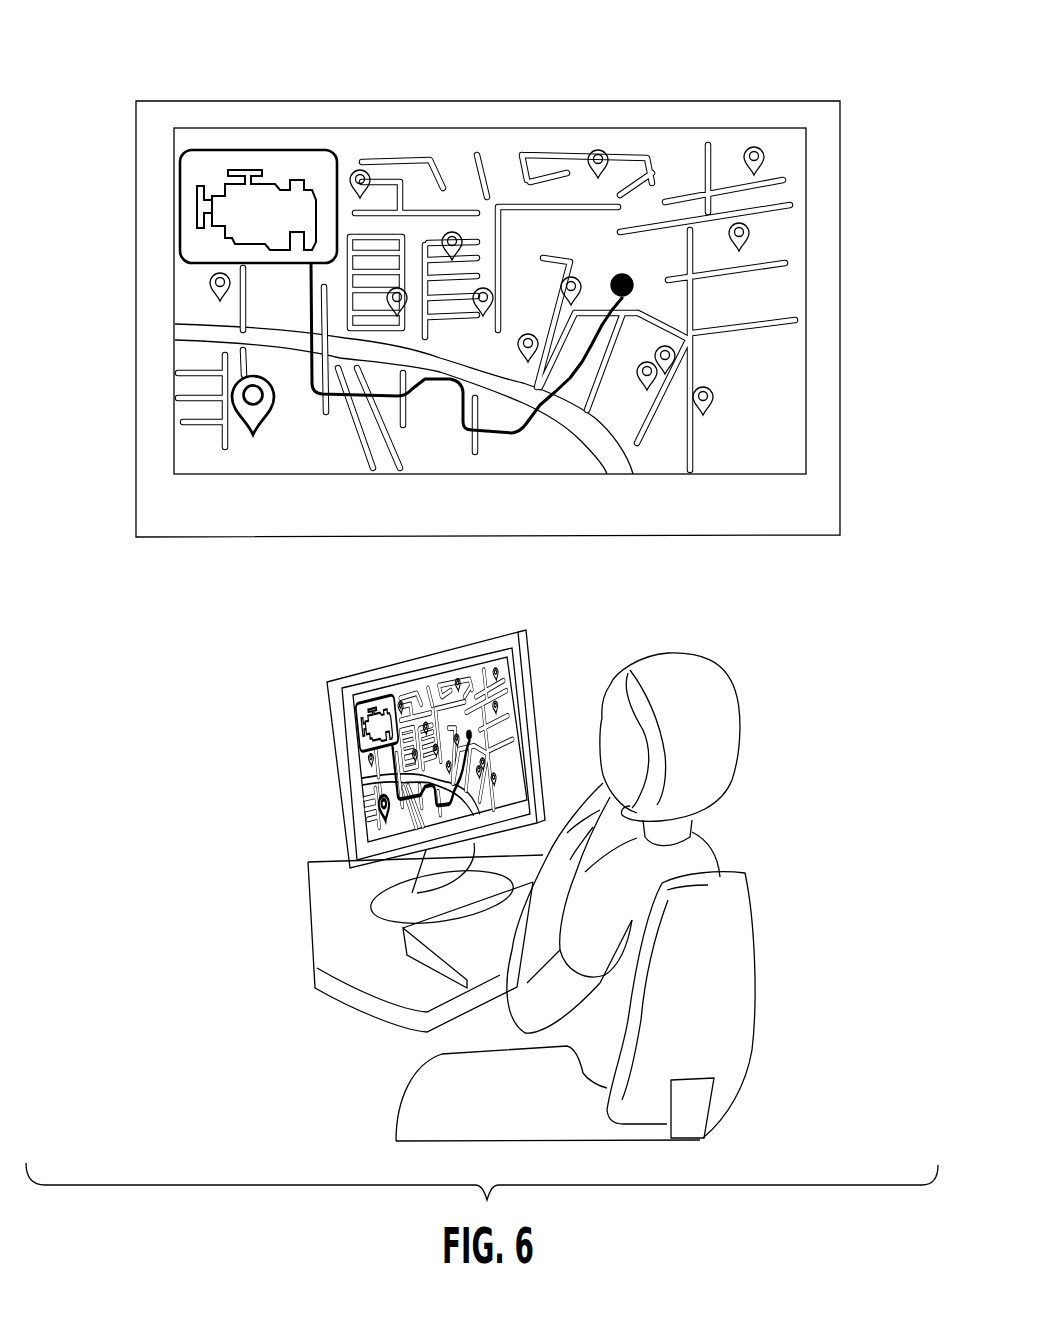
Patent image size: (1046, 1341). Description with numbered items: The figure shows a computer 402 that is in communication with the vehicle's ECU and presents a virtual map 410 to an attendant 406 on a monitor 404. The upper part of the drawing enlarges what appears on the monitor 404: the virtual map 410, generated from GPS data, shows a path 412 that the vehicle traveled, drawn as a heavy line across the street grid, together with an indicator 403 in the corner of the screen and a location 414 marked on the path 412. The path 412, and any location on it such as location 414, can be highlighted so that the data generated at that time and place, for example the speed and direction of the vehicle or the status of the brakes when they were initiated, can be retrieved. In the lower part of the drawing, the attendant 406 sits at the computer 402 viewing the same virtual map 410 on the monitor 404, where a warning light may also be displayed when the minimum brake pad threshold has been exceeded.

The computer 402 is at (382, 908).
The check engine indicator 403 is at (247, 172).
The monitor 404 is at (800, 64).
The attendant 406 is at (700, 713).
The virtual map 410 is at (598, 150).
The path 412 is at (335, 400).
The location 414 is at (622, 276).